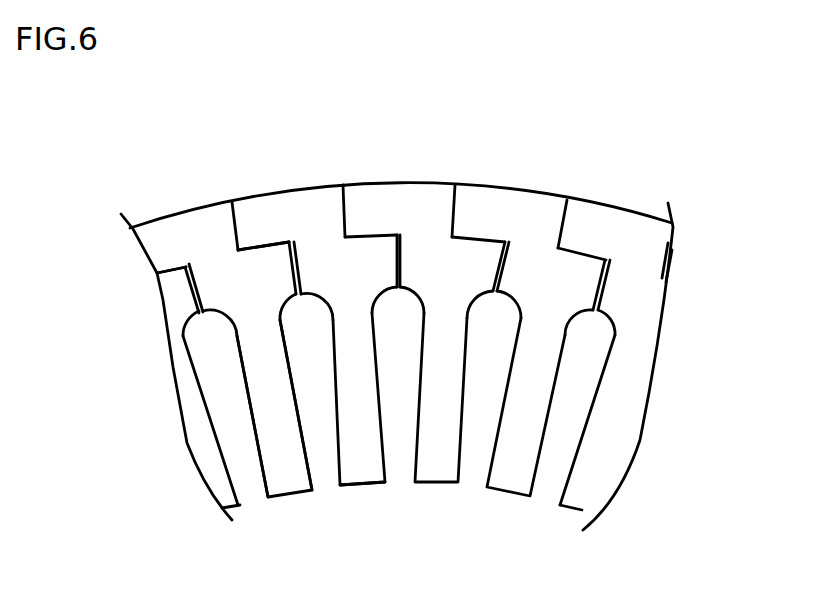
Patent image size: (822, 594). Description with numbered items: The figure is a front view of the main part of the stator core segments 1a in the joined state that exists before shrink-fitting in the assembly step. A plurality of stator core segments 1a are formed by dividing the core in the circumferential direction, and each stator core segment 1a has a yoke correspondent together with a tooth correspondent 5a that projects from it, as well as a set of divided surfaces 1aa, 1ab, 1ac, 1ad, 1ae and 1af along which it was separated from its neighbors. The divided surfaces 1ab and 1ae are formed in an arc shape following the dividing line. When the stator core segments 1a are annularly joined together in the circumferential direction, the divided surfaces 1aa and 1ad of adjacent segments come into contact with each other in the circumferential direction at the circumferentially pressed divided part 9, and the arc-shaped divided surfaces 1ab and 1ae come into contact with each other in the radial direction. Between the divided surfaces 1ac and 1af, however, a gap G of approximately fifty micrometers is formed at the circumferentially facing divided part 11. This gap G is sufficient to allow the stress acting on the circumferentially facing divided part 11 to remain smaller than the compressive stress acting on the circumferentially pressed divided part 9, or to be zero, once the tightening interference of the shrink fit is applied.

The stator core segment 1a is at (150, 210).
The divided surface 1aa is at (236, 232).
The divided surface 1ab is at (283, 240).
The divided surface 1ac is at (352, 400).
The divided surface 1ad is at (212, 222).
The divided surface 1ae is at (254, 248).
The divided surface 1af is at (283, 252).
The circumferentially pressed divided part 9 is at (222, 218).
The circumferentially facing divided part 11 is at (300, 250).
The tooth correspondent 5a is at (437, 472).
The gap G is at (200, 318).